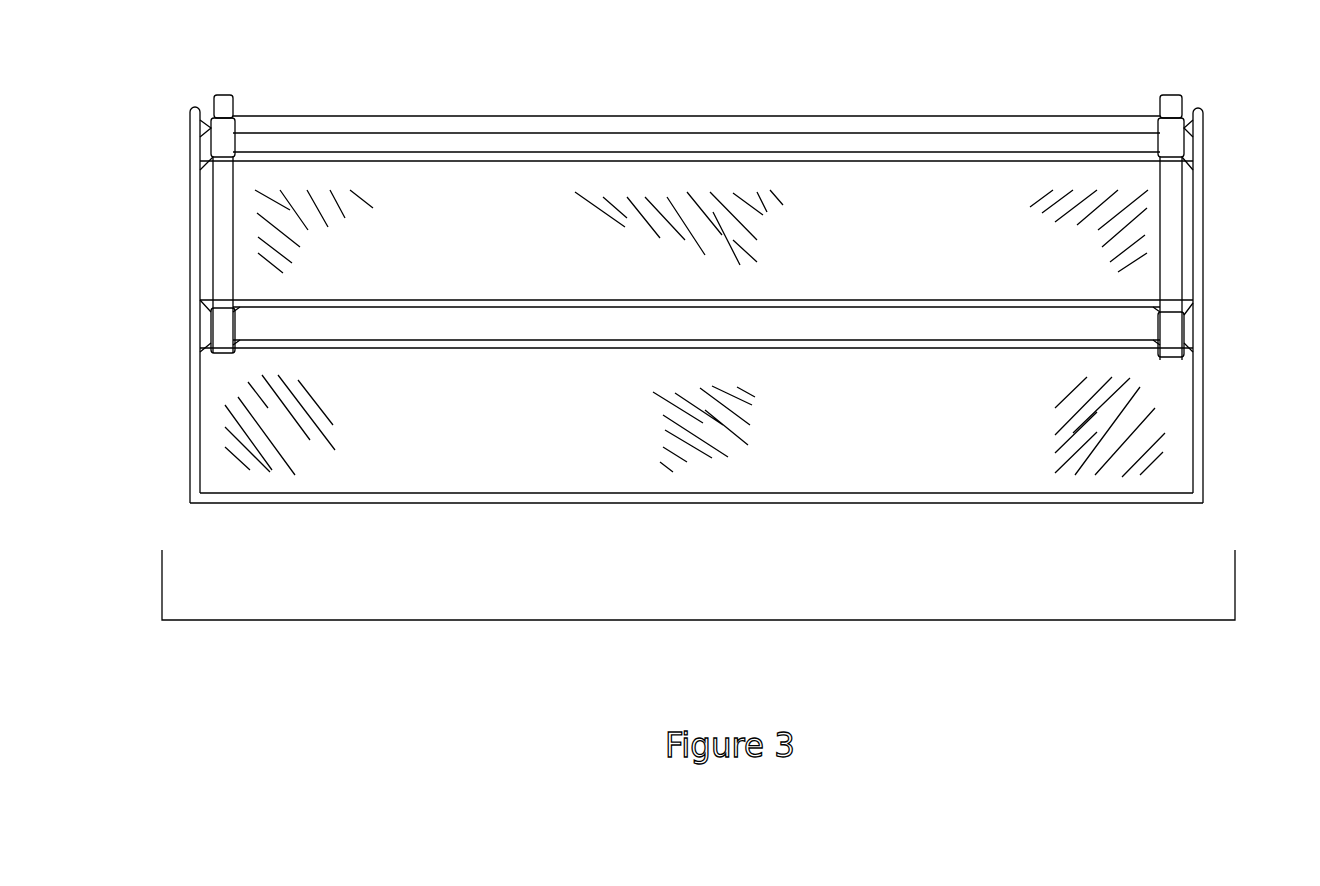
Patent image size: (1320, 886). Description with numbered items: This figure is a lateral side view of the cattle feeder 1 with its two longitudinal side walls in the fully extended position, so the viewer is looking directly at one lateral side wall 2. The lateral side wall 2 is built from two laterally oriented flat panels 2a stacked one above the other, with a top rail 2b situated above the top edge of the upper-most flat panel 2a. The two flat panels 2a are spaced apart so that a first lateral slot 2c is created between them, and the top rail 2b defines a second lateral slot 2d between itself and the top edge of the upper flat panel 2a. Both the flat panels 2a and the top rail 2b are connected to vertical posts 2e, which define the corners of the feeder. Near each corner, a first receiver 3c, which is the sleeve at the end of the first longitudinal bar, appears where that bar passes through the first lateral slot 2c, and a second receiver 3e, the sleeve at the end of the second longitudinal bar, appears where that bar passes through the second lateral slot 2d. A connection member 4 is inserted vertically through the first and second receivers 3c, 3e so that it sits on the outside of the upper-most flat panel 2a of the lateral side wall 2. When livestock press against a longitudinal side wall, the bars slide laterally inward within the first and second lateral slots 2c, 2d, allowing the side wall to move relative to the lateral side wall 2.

The cattle feeder 1 is at (695, 620).
The lateral side wall 2 is at (687, 306).
The laterally oriented flat panel 2a is at (858, 218).
The top rail 2b is at (472, 132).
The first lateral slot 2c is at (618, 330).
The second lateral slot 2d is at (558, 146).
The vertical post 2e is at (1200, 152).
The first receiver 3c is at (220, 320).
The second receiver 3e is at (222, 150).
The connection member 4 is at (232, 108).